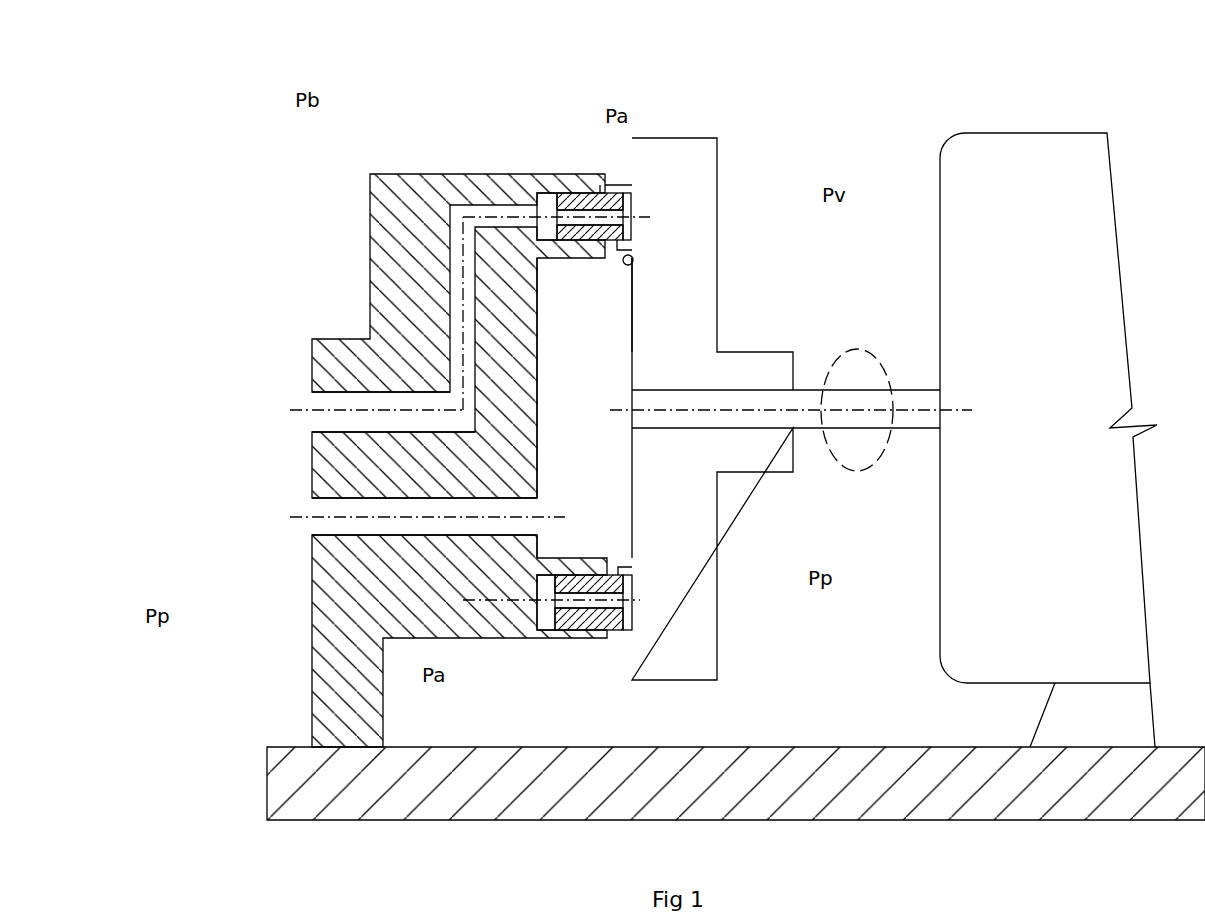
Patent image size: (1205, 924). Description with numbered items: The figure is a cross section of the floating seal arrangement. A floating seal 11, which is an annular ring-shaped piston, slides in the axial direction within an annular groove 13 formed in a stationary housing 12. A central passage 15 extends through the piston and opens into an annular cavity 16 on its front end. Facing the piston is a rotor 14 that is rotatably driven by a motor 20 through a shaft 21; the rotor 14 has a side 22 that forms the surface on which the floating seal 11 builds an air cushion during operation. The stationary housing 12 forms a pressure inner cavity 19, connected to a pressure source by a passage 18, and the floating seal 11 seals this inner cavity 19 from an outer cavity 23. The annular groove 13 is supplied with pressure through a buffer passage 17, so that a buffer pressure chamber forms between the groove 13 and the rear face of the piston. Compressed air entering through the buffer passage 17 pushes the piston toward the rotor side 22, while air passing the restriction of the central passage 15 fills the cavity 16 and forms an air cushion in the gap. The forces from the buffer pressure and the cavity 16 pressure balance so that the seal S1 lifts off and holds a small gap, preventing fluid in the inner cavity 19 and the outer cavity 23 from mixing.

The floating seal 11 is at (580, 200).
The stationary housing 12 is at (328, 568).
The annular groove 13 is at (540, 197).
The rotor 14 is at (698, 158).
The central passage 15 is at (547, 203).
The cavity 16 is at (627, 210).
The buffer passage 17 is at (335, 397).
The passage 18 is at (325, 527).
The inner cavity 19 is at (590, 457).
The motor 20 is at (1003, 163).
The shaft 21 is at (742, 412).
The side 22 is at (630, 302).
The outer cavity 23 is at (433, 700).
The seal gap S1 is at (577, 615).